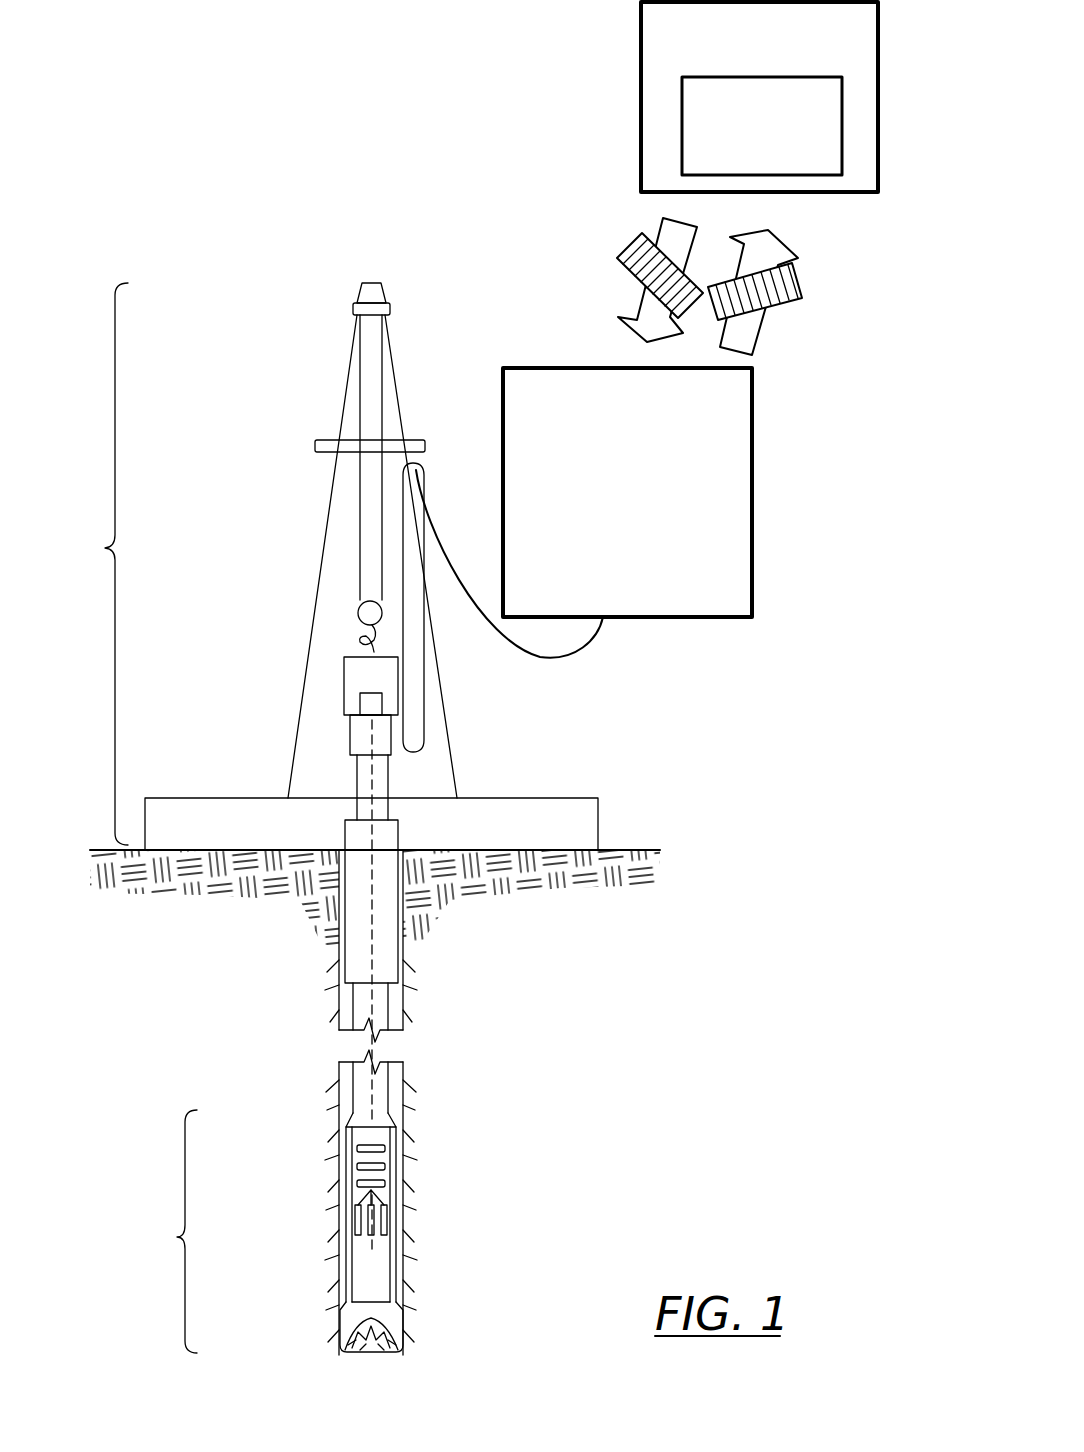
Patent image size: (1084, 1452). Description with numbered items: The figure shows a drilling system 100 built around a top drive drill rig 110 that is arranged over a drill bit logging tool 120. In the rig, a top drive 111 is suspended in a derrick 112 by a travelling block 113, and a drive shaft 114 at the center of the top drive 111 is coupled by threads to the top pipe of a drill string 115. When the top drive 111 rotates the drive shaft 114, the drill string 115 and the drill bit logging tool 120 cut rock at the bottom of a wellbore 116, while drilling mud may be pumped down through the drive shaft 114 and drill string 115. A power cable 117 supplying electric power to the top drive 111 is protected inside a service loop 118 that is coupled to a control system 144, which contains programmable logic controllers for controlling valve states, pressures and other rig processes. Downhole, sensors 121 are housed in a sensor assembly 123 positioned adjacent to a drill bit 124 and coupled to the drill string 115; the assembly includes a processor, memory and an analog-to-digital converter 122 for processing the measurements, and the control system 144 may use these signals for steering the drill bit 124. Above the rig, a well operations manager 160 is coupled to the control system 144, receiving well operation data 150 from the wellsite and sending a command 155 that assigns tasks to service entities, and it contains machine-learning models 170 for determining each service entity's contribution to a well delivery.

The drilling system 100 is at (266, 268).
The top drive drill rig 110 is at (105, 548).
The top drive 111 is at (344, 672).
The derrick 112 is at (297, 722).
The travelling block 113 is at (357, 607).
The drive shaft 114 is at (350, 742).
The drill string 115 is at (353, 1020).
The wellbore 116 is at (348, 990).
The power cable 117 is at (425, 690).
The service loop 118 is at (573, 655).
The drill bit logging tool 120 is at (180, 1237).
The sensors 121 is at (352, 1218).
The analog-to-digital converter 122 is at (386, 1183).
The sensor assembly 123 is at (347, 1150).
The drill bit 124 is at (345, 1340).
The control system 144 is at (645, 457).
The well operation data 150 is at (806, 268).
The command 155 is at (618, 250).
The well operations manager 160 is at (775, 68).
The machine-learning models 170 is at (812, 148).